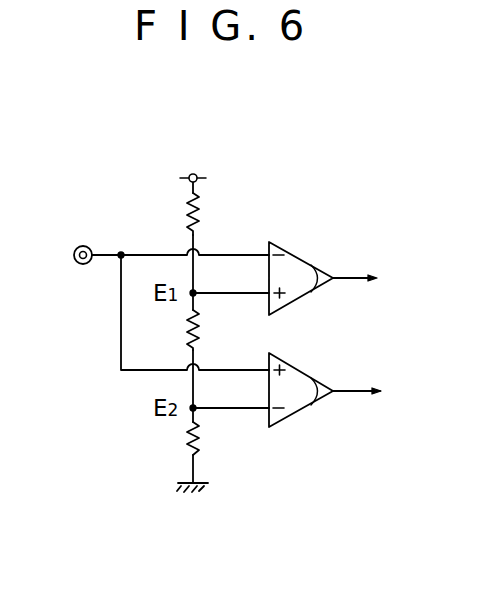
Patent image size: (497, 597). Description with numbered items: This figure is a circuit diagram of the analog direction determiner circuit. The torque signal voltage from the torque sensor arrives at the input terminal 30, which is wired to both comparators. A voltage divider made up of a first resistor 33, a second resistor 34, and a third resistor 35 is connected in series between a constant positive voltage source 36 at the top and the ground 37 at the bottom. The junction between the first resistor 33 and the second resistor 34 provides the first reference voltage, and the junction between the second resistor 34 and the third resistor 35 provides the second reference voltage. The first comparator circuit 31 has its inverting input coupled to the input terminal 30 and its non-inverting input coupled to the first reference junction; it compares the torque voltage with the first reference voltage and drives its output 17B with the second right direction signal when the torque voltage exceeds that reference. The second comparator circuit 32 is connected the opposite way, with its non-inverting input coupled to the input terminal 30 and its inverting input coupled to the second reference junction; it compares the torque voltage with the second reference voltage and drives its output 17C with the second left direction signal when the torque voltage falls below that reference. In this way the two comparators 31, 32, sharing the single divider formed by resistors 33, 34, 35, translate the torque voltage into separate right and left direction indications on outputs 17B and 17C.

The input terminal 30 is at (84, 265).
The constant positive voltage source 36 is at (188, 178).
The first resistor 33 is at (200, 211).
The second resistor 34 is at (200, 327).
The third resistor 35 is at (187, 435).
The ground 37 is at (200, 488).
The first comparator circuit 31 is at (309, 300).
The second comparator circuit 32 is at (297, 408).
The second right direction signal output 17B is at (355, 279).
The second left direction signal output 17C is at (355, 392).